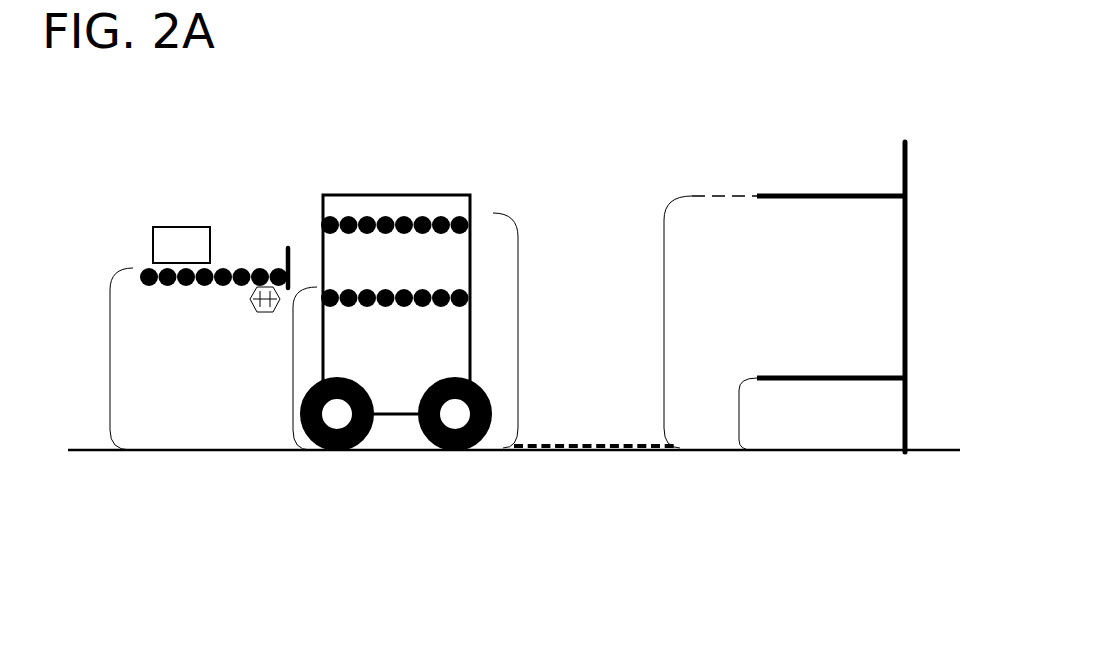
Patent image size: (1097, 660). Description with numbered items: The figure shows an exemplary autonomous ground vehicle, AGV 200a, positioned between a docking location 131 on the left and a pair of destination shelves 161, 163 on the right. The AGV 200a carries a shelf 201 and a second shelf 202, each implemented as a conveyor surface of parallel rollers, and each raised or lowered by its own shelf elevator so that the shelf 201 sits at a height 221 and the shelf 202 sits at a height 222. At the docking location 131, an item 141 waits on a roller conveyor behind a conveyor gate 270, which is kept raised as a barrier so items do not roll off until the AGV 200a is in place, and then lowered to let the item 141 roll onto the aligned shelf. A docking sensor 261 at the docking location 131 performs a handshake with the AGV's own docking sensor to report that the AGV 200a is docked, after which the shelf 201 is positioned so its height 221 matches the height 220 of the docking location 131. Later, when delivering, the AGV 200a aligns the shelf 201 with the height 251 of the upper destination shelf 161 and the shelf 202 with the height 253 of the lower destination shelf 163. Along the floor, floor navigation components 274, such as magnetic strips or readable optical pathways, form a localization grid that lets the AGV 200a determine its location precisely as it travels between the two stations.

The docking location 131 is at (237, 222).
The item 141 is at (197, 256).
The conveyor gate 270 is at (289, 247).
The docking sensor 261 is at (255, 302).
The height of docking location 220 is at (108, 360).
The height of shelf 202 222 is at (292, 368).
The autonomous ground vehicle (AGV) 200a is at (415, 193).
The shelf 201 is at (348, 215).
The second shelf 202 is at (383, 310).
The height of shelf 201 221 is at (518, 333).
The floor navigation components 274 is at (603, 443).
The height of destination location 151 251 is at (663, 323).
The upper storage shelf 161 is at (830, 124).
The lower storage shelf 163 is at (846, 347).
The height of destination location 153 253 is at (738, 415).